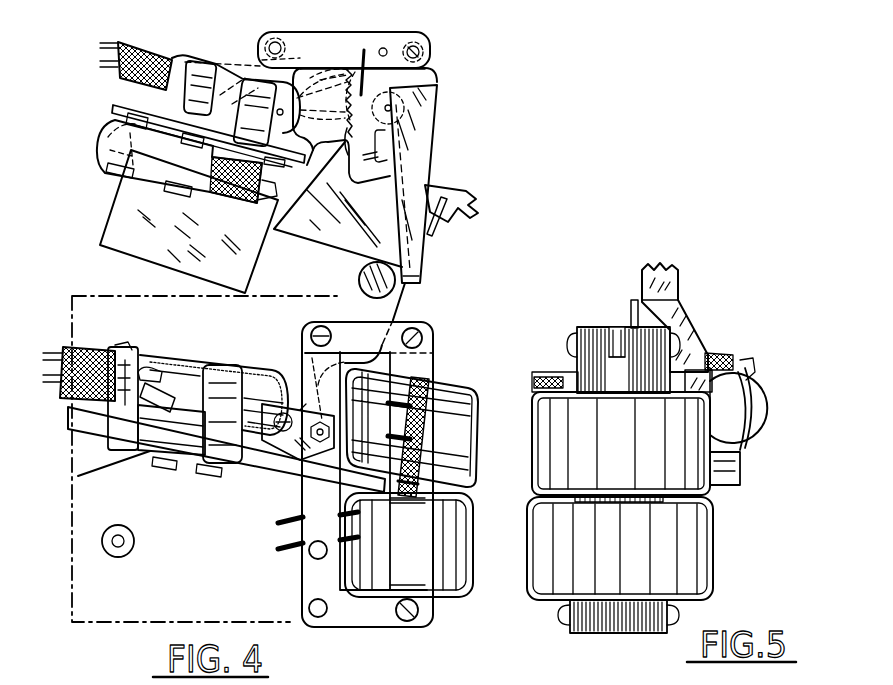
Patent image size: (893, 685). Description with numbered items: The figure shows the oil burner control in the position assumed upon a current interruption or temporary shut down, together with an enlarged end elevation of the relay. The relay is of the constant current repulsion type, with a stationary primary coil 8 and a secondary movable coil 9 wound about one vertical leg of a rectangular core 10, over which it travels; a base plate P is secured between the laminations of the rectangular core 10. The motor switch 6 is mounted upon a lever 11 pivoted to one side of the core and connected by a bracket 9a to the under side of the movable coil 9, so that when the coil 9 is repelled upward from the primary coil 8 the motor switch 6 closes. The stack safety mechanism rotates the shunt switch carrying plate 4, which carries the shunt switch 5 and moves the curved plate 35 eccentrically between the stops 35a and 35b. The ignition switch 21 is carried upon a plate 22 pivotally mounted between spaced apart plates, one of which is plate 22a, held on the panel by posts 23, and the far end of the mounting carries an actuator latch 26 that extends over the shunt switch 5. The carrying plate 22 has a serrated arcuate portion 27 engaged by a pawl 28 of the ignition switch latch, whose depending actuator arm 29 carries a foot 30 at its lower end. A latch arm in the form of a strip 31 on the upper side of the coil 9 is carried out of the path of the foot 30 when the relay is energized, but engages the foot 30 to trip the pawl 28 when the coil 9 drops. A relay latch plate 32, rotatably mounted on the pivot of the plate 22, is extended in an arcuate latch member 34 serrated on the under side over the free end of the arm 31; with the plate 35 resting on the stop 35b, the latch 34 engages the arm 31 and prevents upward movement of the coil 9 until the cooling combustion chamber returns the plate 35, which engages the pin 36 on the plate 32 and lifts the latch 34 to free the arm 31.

In FIG. 4, the shunt switch carrying plate 4 is at (120, 210).
In FIG. 4, the shunt switch 5 is at (118, 152).
In FIG. 4, the motor switch 6 is at (192, 363).
In FIG. 5, the motor switch 6 is at (725, 407).
In FIG. 4, the stationary primary coil 8 is at (452, 548).
In FIG. 5, the stationary primary coil 8 is at (678, 541).
In FIG. 4, the secondary movable coil 9 is at (448, 408).
In FIG. 5, the secondary movable coil 9 is at (690, 482).
In FIG. 4, the bracket 9a is at (380, 479).
In FIG. 4, the rectangular core 10 is at (363, 613).
In FIG. 5, the rectangular core 10 is at (607, 330).
In FIG. 4, the lever 11 is at (250, 467).
In FIG. 5, the lever 11 is at (740, 478).
In FIG. 4, the ignition switch 21 is at (228, 73).
In FIG. 4, the carrying plate 22 is at (312, 172).
In FIG. 4, the spaced apart plate 22a is at (304, 50).
In FIG. 4, the posts 23 is at (271, 42).
In FIG. 4, the actuator latch 26 is at (112, 110).
In FIG. 4, the serrated arcuate portion 27 is at (365, 126).
In FIG. 4, the pawl 28 is at (365, 100).
In FIG. 4, the depending actuator arm 29 is at (418, 148).
In FIG. 4, the foot 30 is at (418, 262).
In FIG. 4, the latch arm 31 is at (398, 307).
In FIG. 5, the latch arm 31 is at (672, 283).
In FIG. 4, the relay latch plate 32 is at (435, 187).
In FIG. 4, the arcuate latch member 34 is at (455, 208).
In FIG. 4, the curved plate 35 is at (347, 238).
In FIG. 4, the stop 35a is at (357, 40).
In FIG. 4, the stop 35b is at (360, 281).
In FIG. 4, the pin 36 is at (400, 115).
In FIG. 4, the base plate P is at (100, 623).
In FIG. 5, the base plate P is at (630, 302).